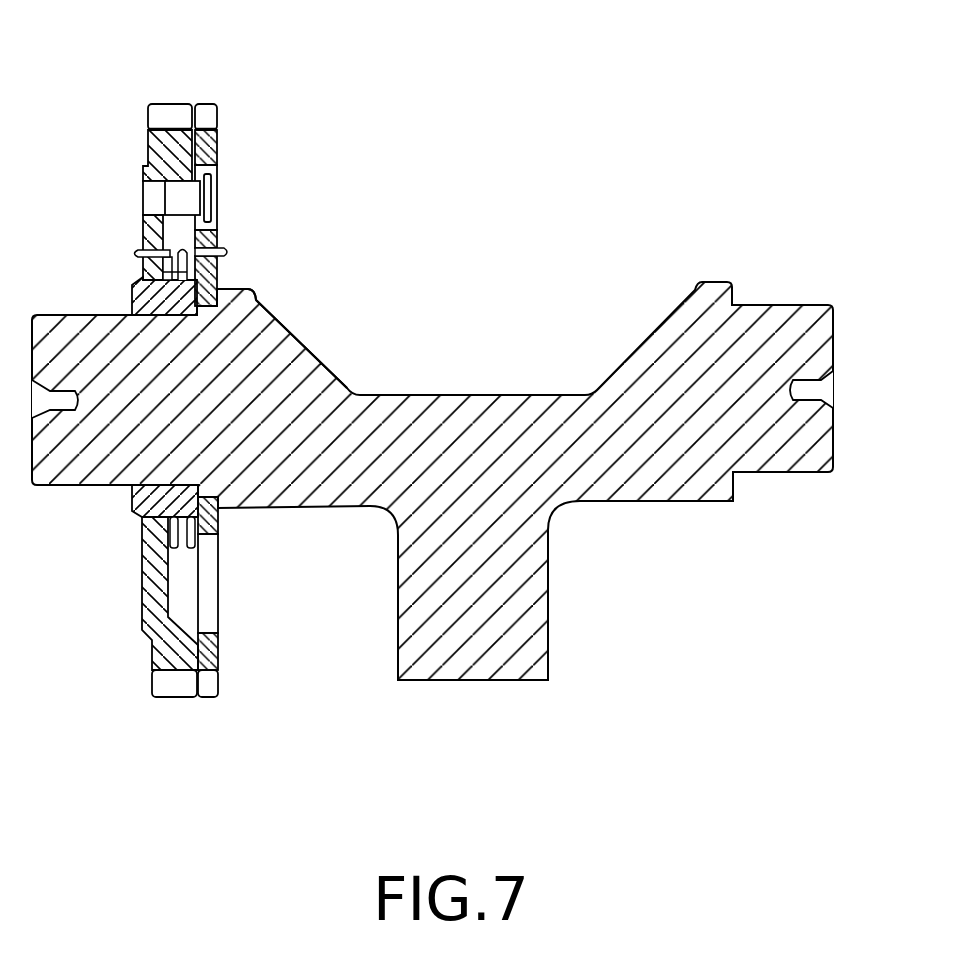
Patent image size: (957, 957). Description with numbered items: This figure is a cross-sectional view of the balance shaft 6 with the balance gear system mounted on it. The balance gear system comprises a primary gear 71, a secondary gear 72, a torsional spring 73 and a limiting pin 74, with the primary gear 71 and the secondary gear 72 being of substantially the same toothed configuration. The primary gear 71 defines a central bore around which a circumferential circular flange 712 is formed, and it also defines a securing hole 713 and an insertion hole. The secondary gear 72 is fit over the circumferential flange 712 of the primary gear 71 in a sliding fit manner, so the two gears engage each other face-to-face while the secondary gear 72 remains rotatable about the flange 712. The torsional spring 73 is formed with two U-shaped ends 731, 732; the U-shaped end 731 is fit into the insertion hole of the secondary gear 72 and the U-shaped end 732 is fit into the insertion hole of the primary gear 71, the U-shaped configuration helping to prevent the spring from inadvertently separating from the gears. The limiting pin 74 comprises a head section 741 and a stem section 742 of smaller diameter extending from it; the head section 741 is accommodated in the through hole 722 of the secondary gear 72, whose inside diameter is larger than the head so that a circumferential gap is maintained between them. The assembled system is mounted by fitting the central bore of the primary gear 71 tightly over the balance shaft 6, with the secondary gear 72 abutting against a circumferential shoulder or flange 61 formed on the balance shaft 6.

The balance shaft 6 is at (623, 506).
The circumferential shoulder or flange 61 is at (233, 296).
The circumferential circular flange 712 is at (278, 323).
The primary gear 71 is at (170, 104).
The secondary gear 72 is at (217, 130).
The through hole 722 is at (217, 168).
The limiting pin 74 is at (197, 173).
The stem section 742 is at (143, 193).
The head section 741 is at (212, 200).
The securing hole 713 is at (143, 225).
The torsional spring 73 is at (132, 284).
The U-shaped end 732 is at (133, 253).
The U-shaped end 731 is at (230, 252).